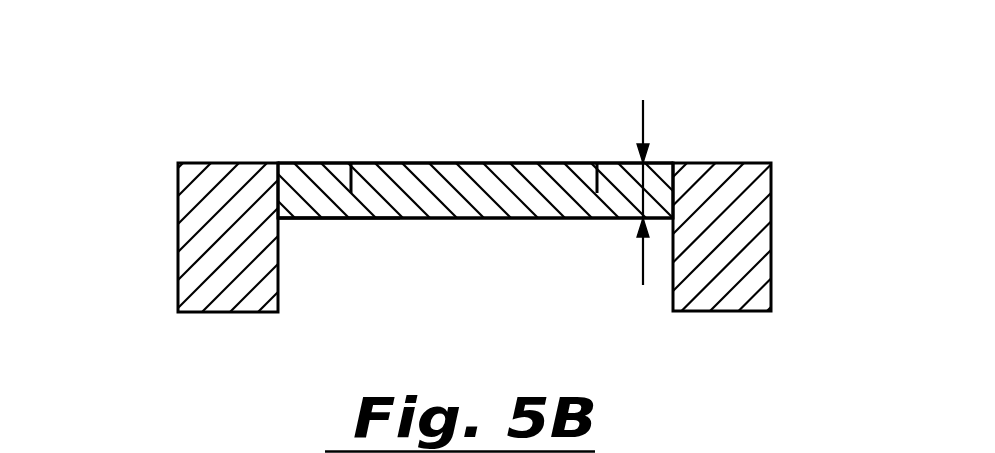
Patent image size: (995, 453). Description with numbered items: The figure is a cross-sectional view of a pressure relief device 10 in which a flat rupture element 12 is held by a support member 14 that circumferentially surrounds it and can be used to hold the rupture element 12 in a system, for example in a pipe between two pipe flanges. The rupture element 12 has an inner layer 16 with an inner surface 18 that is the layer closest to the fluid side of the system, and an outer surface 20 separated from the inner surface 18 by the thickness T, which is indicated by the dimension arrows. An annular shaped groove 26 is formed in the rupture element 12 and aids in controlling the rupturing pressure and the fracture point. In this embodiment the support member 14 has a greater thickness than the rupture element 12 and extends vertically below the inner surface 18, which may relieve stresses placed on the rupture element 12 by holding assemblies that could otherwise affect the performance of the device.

The pressure relief device 10 is at (183, 140).
The rupture element 12 is at (455, 206).
The support member 14 is at (208, 215).
The inner layer 16 is at (540, 203).
The inner surface 18 is at (332, 219).
The outer surface 20 is at (442, 163).
The annular groove 26 is at (328, 163).
The thickness T is at (657, 165).